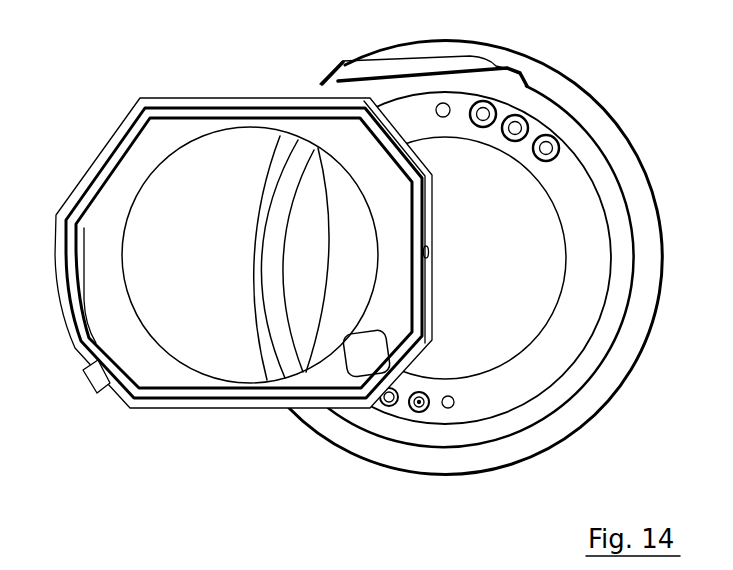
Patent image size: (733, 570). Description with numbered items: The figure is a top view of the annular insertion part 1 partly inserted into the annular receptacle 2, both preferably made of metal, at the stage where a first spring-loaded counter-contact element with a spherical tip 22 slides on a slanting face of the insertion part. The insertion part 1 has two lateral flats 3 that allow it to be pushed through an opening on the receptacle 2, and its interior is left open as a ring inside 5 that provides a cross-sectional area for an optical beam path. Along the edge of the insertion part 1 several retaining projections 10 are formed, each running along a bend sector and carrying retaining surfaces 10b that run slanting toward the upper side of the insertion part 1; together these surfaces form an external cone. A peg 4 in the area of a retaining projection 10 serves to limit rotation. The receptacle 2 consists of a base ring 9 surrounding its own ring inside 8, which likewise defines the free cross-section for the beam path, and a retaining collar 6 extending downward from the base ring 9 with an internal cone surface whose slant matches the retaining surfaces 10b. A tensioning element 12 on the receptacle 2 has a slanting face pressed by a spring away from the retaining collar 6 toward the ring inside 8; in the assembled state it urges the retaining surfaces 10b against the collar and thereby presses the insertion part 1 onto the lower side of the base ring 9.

The insertion part 1 is at (118, 132).
The receptacle 2 is at (561, 126).
The lateral flats 3 is at (272, 97).
The peg 4 is at (86, 402).
The ring inside 5 is at (204, 267).
The retaining collar 6 is at (640, 322).
The ring inside 8 is at (492, 273).
The base ring 9 is at (572, 286).
The retaining projections 10 is at (72, 342).
The retaining surfaces 10b is at (424, 160).
The tensioning element 12 is at (432, 62).
The spherical tip 22 is at (420, 410).